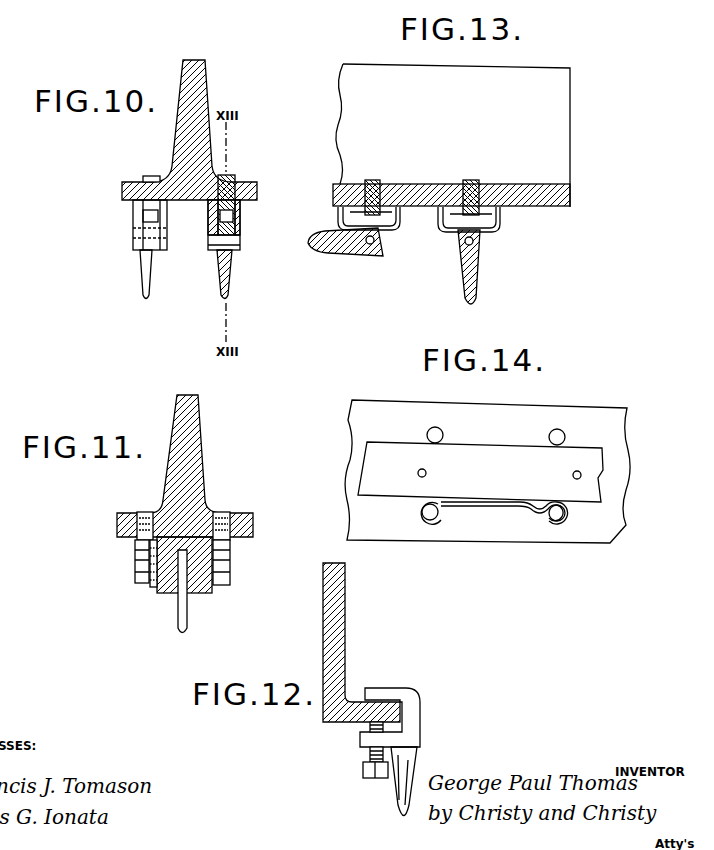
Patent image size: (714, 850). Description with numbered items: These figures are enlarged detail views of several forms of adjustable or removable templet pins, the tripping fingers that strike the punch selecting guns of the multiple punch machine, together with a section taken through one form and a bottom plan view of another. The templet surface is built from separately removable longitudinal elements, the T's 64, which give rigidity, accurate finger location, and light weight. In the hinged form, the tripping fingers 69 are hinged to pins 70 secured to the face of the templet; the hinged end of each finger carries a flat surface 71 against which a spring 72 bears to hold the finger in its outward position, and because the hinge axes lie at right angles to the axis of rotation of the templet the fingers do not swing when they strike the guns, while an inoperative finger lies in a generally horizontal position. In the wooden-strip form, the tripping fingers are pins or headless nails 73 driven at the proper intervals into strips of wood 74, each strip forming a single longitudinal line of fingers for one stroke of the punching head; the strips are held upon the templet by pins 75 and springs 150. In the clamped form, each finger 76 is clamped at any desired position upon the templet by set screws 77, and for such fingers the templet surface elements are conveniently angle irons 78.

In FIG. 10, the T 64 is at (185, 135).
In FIG. 13, the T 64 is at (553, 126).
In FIG. 11, the T 64 is at (195, 443).
In FIG. 10, the tripping finger 69 is at (143, 278).
In FIG. 13, the tripping finger 69 is at (336, 248).
In FIG. 10, the pin 70 is at (236, 180).
In FIG. 13, the pin 70 is at (376, 180).
In FIG. 13, the flat surface 71 is at (483, 239).
In FIG. 10, the spring 72 is at (240, 222).
In FIG. 13, the spring 72 is at (400, 228).
In FIG. 11, the pin or headless nail 73 is at (178, 620).
In FIG. 14, the pin or headless nail 73 is at (418, 474).
In FIG. 11, the strip of wood 74 is at (197, 594).
In FIG. 14, the strip of wood 74 is at (590, 496).
In FIG. 11, the pin 75 is at (136, 556).
In FIG. 14, the pin 75 is at (427, 434).
In FIG. 12, the finger 76 is at (413, 713).
In FIG. 12, the set screw 77 is at (363, 768).
In FIG. 12, the angle iron 78 is at (338, 641).
In FIG. 11, the spring 150 is at (157, 560).
In FIG. 14, the spring 150 is at (530, 508).